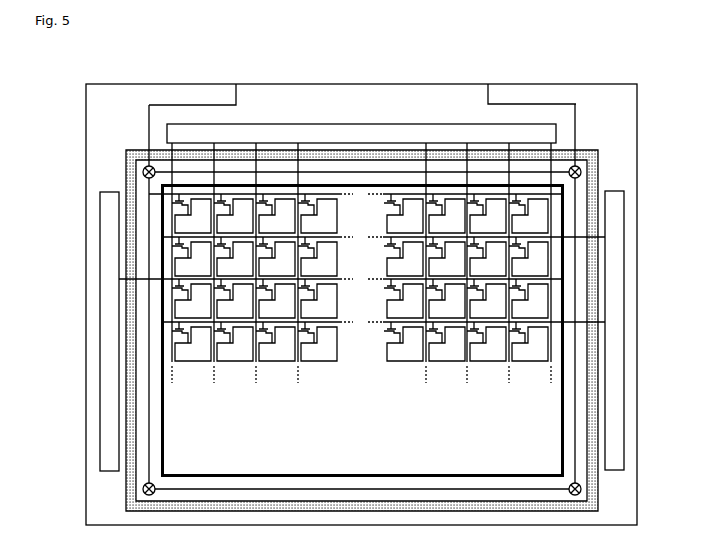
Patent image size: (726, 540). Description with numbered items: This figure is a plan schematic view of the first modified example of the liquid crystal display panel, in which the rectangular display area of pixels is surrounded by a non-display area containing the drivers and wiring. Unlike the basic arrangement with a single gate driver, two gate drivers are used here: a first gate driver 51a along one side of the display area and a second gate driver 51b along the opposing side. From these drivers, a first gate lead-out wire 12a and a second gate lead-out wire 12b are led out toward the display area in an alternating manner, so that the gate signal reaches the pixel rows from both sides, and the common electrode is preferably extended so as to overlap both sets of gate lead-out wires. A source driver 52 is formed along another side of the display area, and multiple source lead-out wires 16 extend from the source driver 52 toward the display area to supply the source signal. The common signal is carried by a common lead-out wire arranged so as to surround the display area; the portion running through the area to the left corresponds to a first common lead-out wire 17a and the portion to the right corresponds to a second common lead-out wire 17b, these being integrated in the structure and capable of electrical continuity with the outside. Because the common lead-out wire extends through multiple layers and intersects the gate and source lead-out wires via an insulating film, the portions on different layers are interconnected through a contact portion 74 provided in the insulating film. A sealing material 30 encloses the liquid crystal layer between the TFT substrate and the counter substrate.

The sealing material 30 is at (128, 380).
The first common lead-out wire 17a is at (170, 104).
The second common lead-out wire 17b is at (553, 102).
The source driver 52 is at (445, 132).
The source lead-out wires 16 is at (136, 181).
The contact portion 74 is at (144, 168).
The first gate driver 51a is at (107, 273).
The second gate driver 51b is at (614, 300).
The first gate lead-out wire 12a is at (148, 197).
The second gate lead-out wire 12b is at (586, 237).